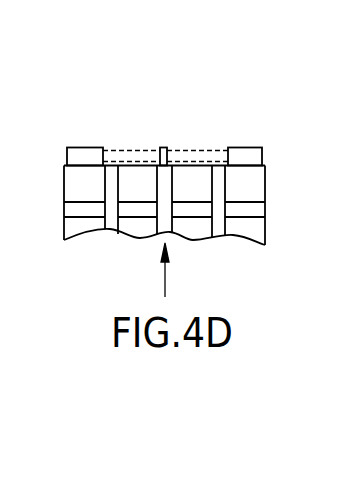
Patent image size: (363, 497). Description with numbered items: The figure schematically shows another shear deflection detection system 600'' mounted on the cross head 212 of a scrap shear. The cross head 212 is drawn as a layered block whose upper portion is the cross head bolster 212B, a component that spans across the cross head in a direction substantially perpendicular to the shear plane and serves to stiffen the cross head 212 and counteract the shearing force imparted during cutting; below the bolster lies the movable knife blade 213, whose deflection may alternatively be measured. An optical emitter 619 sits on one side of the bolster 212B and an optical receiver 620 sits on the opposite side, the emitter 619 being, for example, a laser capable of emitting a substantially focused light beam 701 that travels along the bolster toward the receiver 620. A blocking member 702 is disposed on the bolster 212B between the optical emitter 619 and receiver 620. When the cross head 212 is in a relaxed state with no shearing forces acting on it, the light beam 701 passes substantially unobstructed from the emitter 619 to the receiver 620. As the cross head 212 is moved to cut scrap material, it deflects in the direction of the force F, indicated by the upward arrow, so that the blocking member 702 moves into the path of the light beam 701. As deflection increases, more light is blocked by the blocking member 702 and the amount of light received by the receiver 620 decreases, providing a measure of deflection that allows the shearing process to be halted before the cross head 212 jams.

The shear deflection detection system 600'' is at (196, 154).
The cross head 212 is at (110, 212).
The cross head bolster 212B is at (267, 180).
The movable knife blade 213 is at (267, 209).
The optical emitter 619 is at (86, 147).
The optical receiver 620 is at (245, 147).
The light beam 701 is at (135, 150).
The blocking member 702 is at (165, 146).
The force F is at (175, 270).